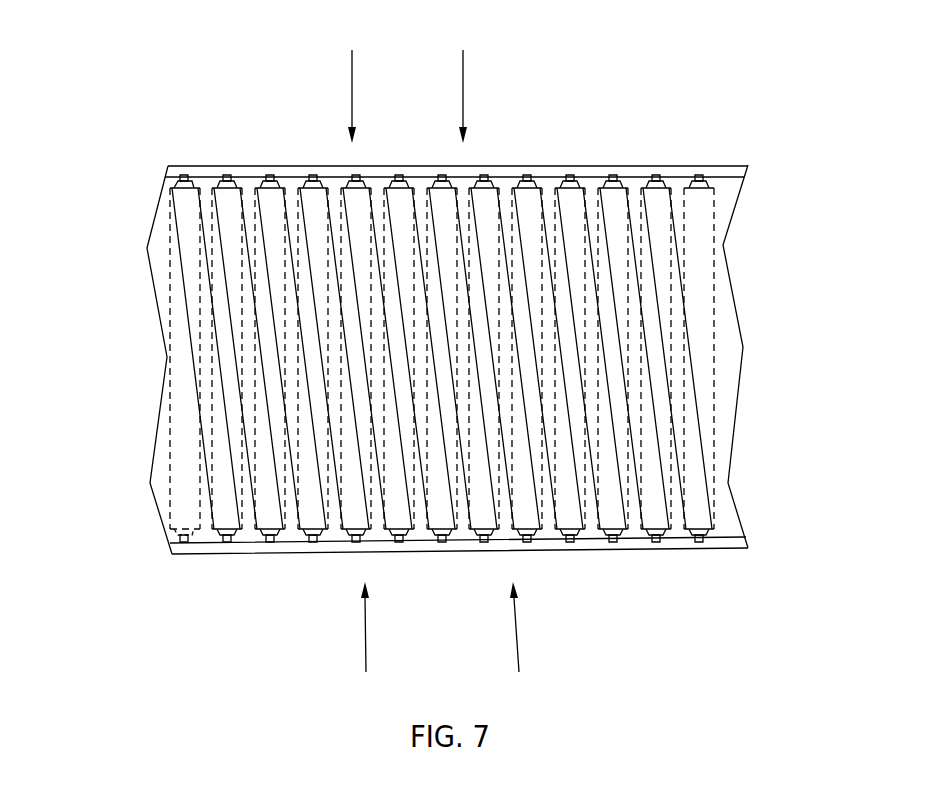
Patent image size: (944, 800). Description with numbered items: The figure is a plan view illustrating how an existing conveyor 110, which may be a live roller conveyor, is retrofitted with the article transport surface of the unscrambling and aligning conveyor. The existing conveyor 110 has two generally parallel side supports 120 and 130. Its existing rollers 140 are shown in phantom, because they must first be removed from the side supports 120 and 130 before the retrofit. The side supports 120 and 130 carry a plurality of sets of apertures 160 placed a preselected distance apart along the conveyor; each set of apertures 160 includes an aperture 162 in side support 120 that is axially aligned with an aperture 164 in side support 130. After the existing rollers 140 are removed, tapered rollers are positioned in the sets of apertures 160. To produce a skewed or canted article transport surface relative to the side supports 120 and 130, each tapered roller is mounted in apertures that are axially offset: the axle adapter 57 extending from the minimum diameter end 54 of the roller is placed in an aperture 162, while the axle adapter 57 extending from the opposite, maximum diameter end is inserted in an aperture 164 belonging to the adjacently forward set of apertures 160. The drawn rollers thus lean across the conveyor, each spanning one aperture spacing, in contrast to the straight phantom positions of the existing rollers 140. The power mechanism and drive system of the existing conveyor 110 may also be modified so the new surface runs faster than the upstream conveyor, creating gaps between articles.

The existing conveyor 110 is at (447, 319).
The side support 120 is at (257, 167).
The side support 130 is at (422, 547).
The existing rollers 140 is at (552, 283).
The minimum diameter end 54 is at (172, 190).
The axle adapter 57 is at (314, 176).
The set of apertures 160 is at (440, 364).
The aperture 162 is at (183, 177).
The aperture 164 is at (613, 175).